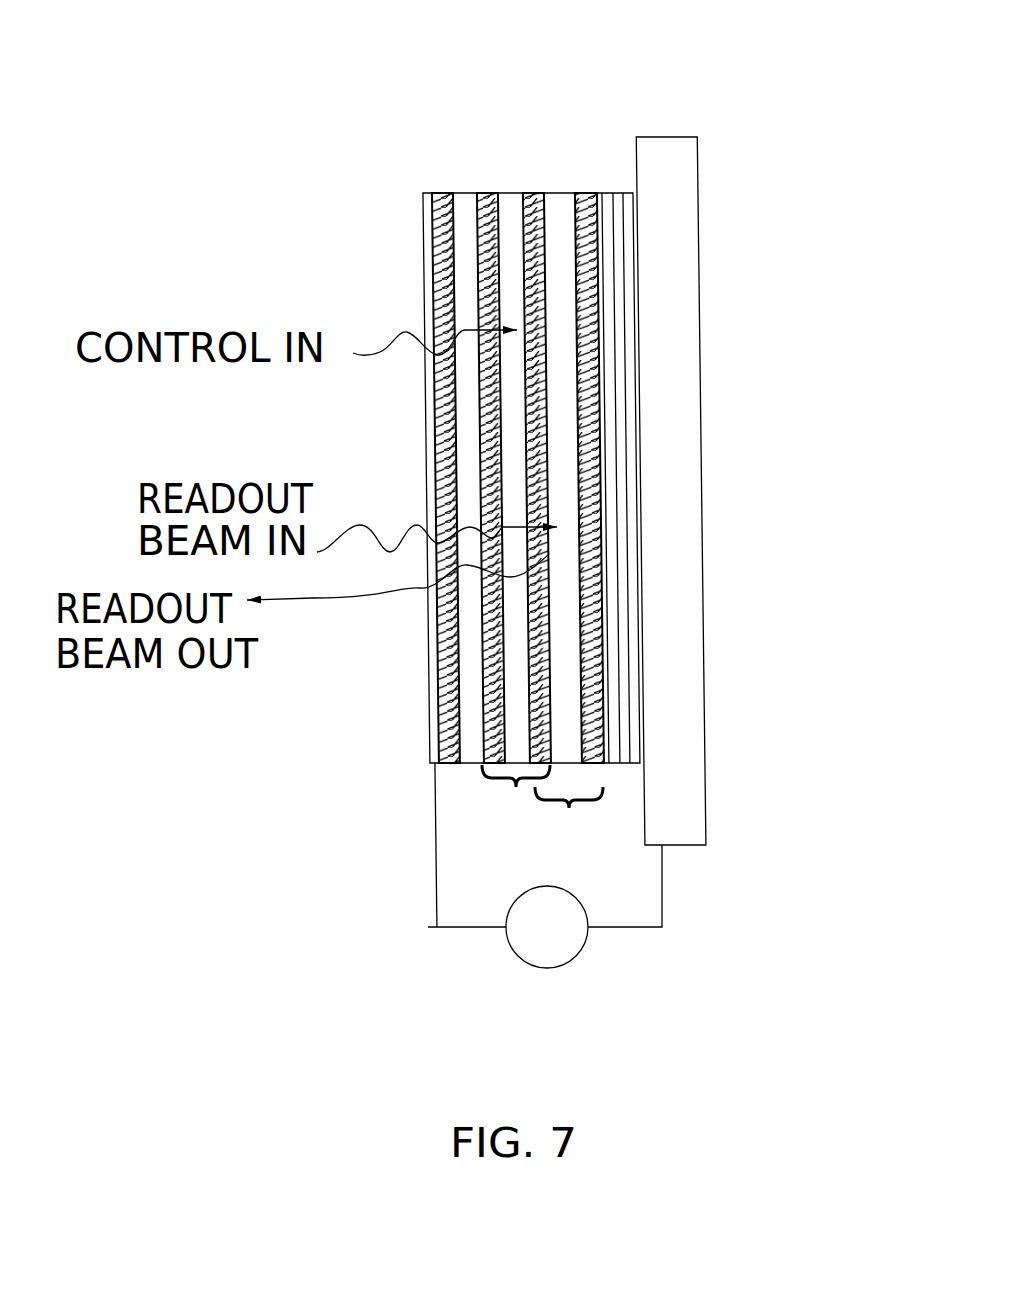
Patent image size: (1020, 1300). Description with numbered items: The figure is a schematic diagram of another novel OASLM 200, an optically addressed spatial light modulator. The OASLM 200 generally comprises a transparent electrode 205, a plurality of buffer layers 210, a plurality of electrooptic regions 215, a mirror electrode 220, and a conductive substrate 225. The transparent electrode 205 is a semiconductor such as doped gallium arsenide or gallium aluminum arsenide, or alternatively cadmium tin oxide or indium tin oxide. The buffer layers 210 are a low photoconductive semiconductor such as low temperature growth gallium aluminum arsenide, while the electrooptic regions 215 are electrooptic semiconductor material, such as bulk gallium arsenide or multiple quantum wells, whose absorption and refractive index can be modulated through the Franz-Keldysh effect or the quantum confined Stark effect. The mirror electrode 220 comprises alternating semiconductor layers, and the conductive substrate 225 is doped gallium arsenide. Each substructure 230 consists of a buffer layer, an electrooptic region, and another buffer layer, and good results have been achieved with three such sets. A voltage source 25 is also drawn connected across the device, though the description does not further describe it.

The spatial light modulator device 200 is at (235, 750).
The substrate / outer layer 205 is at (531, 478).
The electrode layers 210 is at (518, 478).
The liquid crystal layers 215 is at (517, 478).
The dielectric mirror layers 220 is at (616, 478).
The photoconductor / support plate 225 is at (671, 491).
The layer pairs 230 is at (543, 808).
The voltage source 25 is at (562, 942).